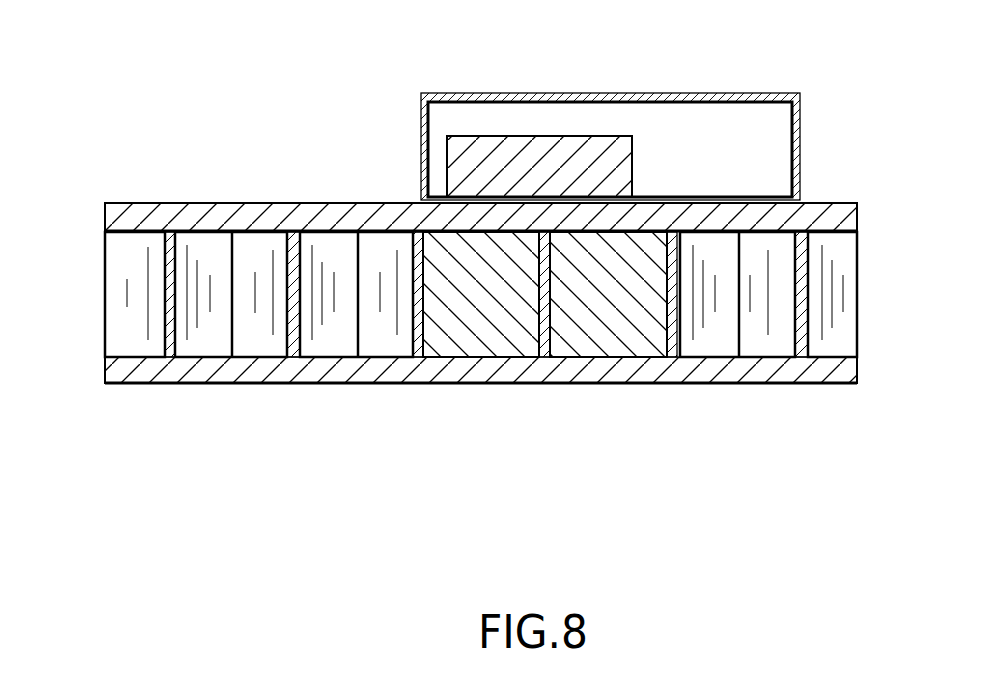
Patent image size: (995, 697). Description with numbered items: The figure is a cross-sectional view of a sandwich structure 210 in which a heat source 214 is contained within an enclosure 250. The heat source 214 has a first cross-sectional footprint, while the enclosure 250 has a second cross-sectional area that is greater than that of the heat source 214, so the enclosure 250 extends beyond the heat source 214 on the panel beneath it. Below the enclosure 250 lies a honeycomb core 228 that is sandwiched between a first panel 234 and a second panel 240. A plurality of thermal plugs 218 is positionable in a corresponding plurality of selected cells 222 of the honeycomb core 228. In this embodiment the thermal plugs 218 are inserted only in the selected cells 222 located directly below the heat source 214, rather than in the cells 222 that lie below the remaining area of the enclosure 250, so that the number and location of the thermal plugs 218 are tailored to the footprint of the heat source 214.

The battery assembly 210 is at (355, 155).
The heat source 214 is at (447, 150).
The thermal plugs 218 is at (493, 337).
The selected cells 222 is at (440, 350).
The honeycomb core 228 is at (90, 330).
The first panel 234 is at (842, 208).
The second panel 240 is at (823, 370).
The enclosure 250 is at (626, 80).